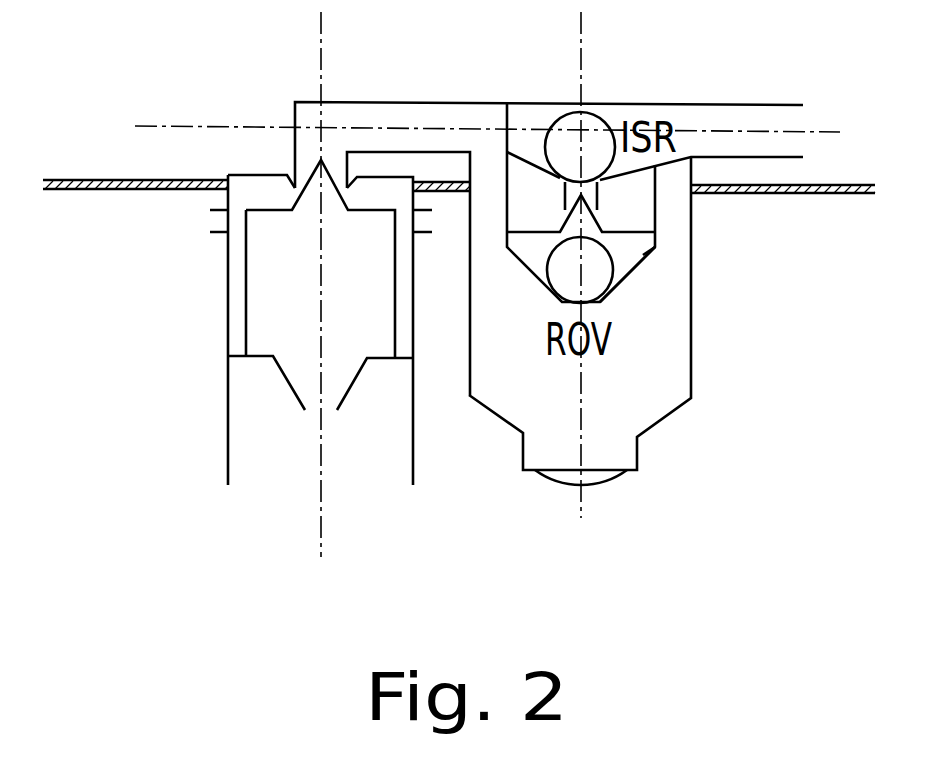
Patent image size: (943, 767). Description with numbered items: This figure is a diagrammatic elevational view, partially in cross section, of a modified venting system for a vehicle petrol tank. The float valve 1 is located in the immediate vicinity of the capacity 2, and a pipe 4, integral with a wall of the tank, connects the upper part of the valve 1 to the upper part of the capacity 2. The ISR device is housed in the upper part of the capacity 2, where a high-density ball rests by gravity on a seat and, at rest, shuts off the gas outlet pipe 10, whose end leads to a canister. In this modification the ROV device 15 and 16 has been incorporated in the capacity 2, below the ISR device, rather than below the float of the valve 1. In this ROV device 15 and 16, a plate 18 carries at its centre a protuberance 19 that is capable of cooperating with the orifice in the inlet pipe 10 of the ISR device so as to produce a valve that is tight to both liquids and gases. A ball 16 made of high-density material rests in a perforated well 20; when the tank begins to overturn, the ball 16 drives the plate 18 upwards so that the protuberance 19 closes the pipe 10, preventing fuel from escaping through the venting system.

The float valve 1 is at (202, 409).
The capacity 2 is at (703, 380).
The pipe 4 is at (360, 117).
The gas outlet pipe 10 is at (597, 190).
The ROV device 15 is at (623, 252).
The ball 16 is at (597, 278).
The plate 18 is at (628, 232).
The protuberance 19 is at (598, 213).
The perforated well 20 is at (540, 270).